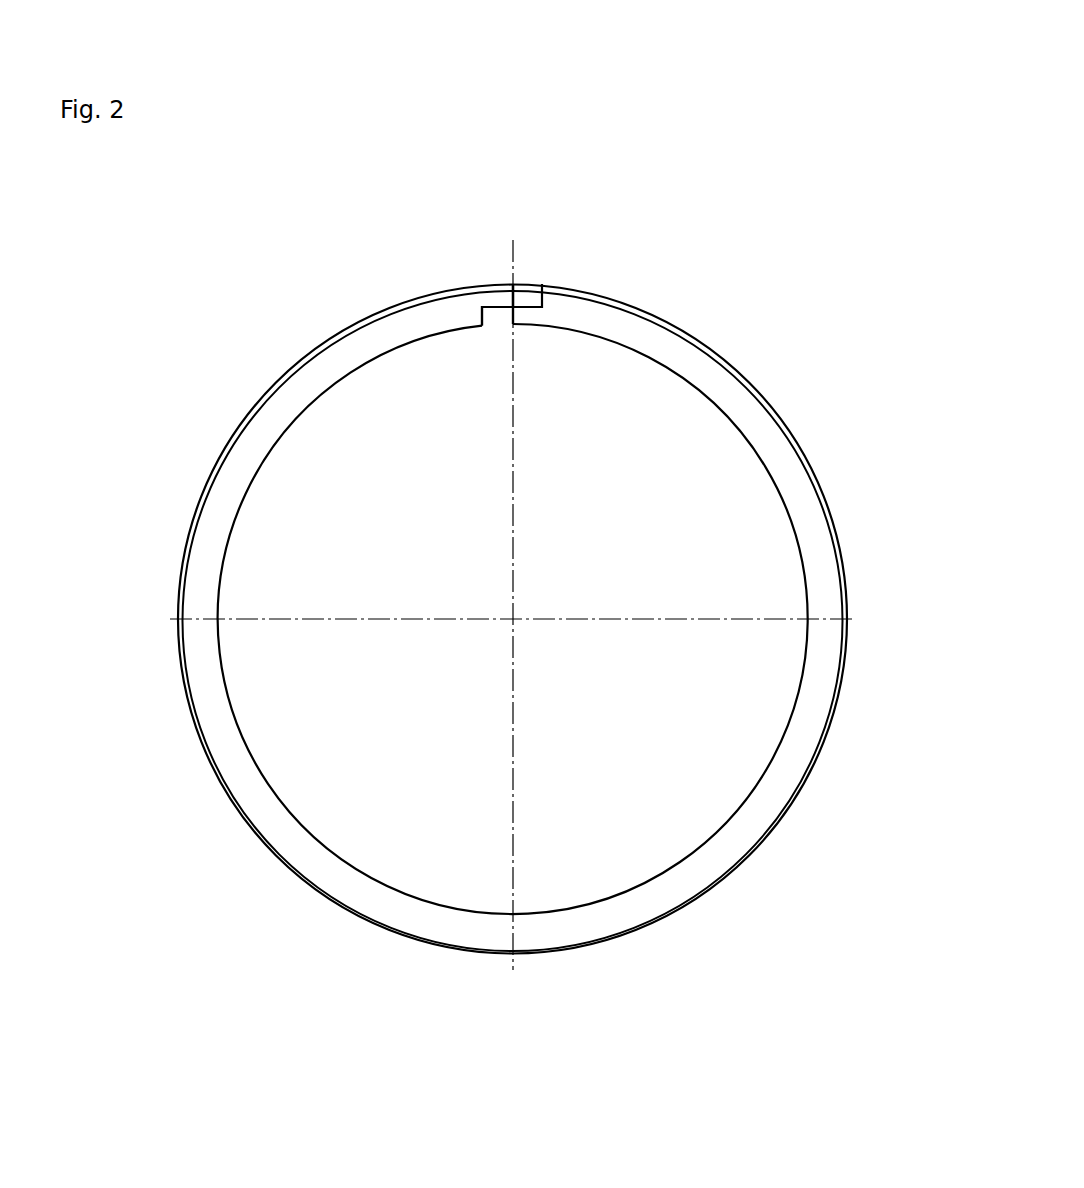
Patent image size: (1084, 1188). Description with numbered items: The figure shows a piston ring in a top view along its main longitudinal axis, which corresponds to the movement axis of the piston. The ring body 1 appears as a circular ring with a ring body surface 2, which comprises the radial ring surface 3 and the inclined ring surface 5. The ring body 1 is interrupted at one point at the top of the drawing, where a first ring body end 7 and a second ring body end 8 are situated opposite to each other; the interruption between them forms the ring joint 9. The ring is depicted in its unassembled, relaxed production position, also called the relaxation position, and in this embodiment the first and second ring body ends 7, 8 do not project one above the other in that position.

The ring body 1 is at (260, 343).
The ring body surface 2 is at (760, 390).
The radial ring surface 3 is at (810, 455).
The inclined ring surface 5 is at (713, 380).
The first ring body end 7 is at (452, 270).
The second ring body end 8 is at (537, 270).
The ring joint 9 is at (514, 265).